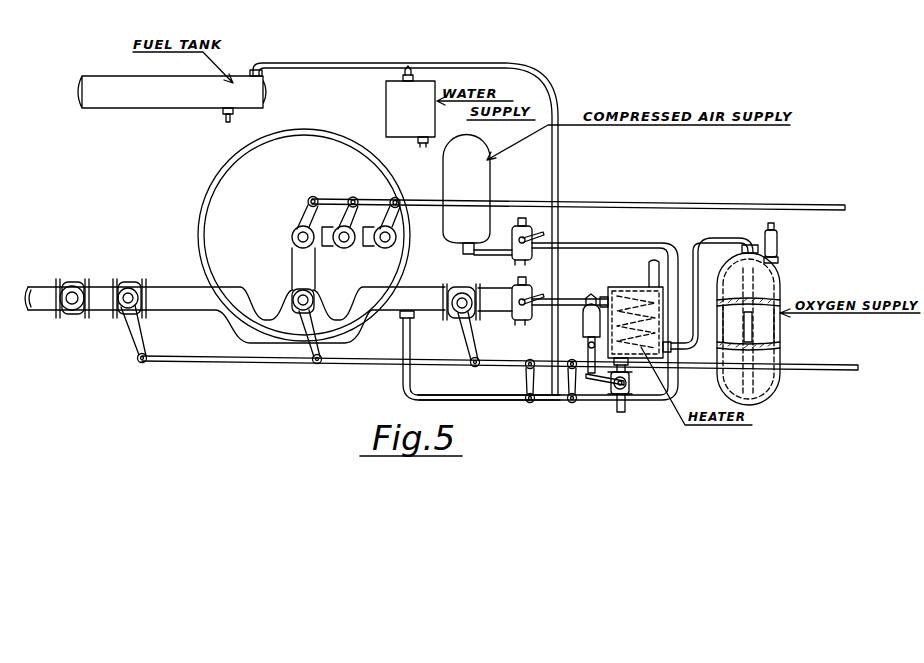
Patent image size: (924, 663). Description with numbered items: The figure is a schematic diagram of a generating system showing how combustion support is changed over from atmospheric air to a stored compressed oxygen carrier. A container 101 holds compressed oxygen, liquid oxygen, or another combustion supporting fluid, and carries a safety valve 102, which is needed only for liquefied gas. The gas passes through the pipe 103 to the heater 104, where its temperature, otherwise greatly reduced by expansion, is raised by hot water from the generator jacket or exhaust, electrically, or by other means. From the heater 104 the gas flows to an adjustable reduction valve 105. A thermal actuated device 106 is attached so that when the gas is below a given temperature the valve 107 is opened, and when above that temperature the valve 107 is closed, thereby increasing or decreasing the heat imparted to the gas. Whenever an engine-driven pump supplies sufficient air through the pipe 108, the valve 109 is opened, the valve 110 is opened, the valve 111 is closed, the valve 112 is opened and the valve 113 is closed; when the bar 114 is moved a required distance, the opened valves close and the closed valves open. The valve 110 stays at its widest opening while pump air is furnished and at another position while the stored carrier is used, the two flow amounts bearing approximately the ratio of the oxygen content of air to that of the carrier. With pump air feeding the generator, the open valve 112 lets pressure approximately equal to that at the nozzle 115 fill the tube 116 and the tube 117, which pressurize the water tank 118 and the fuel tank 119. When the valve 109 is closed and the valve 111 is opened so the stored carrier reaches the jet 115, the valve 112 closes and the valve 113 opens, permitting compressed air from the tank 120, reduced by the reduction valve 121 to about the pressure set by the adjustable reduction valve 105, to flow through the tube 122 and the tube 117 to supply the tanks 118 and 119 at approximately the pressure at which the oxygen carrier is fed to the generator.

The container 101 is at (760, 285).
The safety valve 102 is at (778, 238).
The pipe 103 is at (712, 237).
The heater 104 is at (625, 290).
The adjustable reduction valve 105 is at (537, 290).
The thermal actuated device 106 is at (583, 322).
The valve 107 is at (630, 388).
The pipe 108 is at (175, 290).
The valve 109 is at (127, 310).
The valve 110 is at (297, 312).
The valve 111 is at (453, 314).
The valve 112 is at (530, 403).
The valve 113 is at (575, 403).
The bar 114 is at (810, 371).
The nozzle 115 is at (297, 228).
The tube 116 is at (459, 378).
The tube 117 is at (480, 65).
The water tank 118 is at (410, 106).
The fuel tank 119 is at (172, 96).
The tank 120 is at (477, 195).
The reduction valve 121 is at (511, 222).
The tube 122 is at (663, 246).